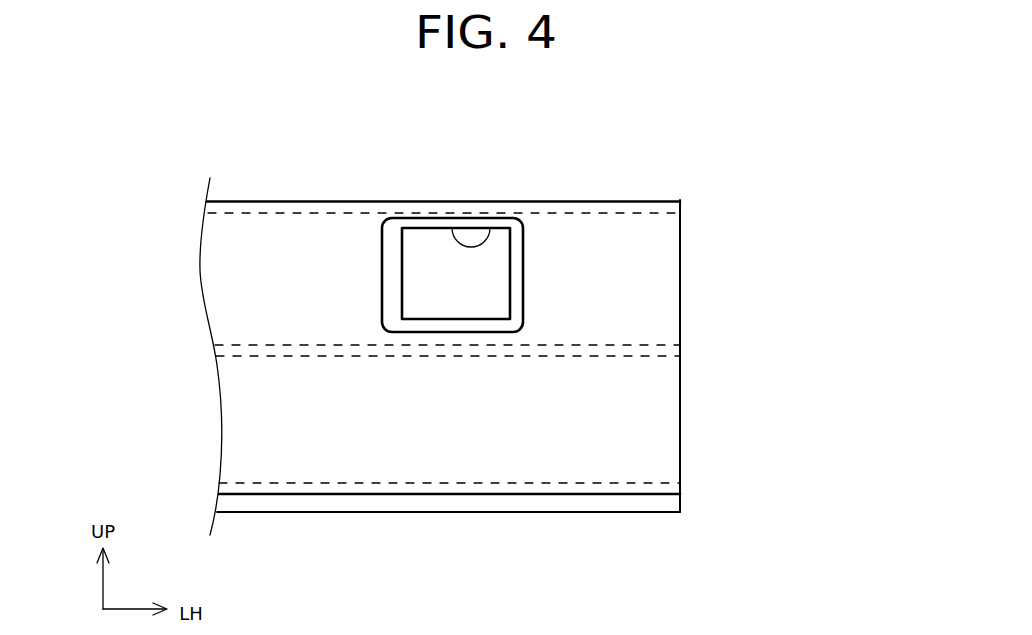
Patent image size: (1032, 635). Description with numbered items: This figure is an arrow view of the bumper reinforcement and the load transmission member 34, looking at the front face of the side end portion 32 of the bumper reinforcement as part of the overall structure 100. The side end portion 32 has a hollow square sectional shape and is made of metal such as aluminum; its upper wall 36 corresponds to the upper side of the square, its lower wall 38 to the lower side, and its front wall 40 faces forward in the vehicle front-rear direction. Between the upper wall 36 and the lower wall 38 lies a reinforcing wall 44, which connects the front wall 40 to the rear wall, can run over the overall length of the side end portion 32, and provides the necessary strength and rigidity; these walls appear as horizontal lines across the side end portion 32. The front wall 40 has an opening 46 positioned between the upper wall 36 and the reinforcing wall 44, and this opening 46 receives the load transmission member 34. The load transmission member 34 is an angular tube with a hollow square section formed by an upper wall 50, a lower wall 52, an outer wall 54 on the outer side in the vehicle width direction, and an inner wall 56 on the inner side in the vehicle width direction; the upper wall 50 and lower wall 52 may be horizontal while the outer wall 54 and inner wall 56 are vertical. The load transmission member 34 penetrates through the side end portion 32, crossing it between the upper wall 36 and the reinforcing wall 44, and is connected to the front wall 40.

The vehicle door structure 100 is at (768, 136).
The side end portion 32 is at (683, 424).
The load transmission member 34 is at (523, 245).
The upper wall 36 is at (630, 213).
The lower wall 38 is at (613, 487).
The front wall 40 is at (641, 291).
The reinforcing wall 44 is at (600, 357).
The opening 46 is at (452, 228).
The upper wall 50 is at (471, 225).
The lower wall 52 is at (458, 327).
The outer wall 54 is at (513, 285).
The inner wall 56 is at (390, 268).